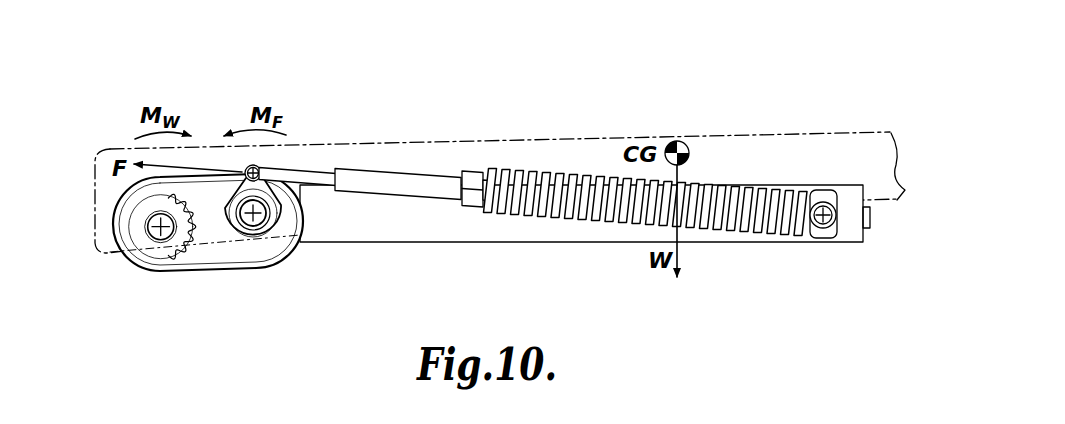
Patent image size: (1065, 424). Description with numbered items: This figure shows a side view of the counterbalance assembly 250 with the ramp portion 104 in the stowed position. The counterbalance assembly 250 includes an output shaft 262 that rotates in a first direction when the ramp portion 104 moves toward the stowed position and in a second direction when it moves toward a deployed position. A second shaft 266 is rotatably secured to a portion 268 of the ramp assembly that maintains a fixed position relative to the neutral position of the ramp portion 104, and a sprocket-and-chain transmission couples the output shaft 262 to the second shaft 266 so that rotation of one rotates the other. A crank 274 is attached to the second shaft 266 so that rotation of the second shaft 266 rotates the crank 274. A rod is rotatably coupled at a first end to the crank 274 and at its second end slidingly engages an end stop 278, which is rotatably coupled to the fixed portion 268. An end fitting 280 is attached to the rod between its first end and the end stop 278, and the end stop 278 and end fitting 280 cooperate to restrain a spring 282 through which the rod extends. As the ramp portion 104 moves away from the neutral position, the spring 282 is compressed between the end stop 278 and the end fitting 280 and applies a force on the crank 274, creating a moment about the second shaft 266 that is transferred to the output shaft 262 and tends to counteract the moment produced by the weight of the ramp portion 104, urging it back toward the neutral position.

The ramp portion 104 is at (718, 133).
The counterbalance assembly 250 is at (632, 89).
The output shaft 262 is at (148, 214).
The second shaft 266 is at (266, 226).
The portion of the ramp assembly 268 is at (565, 242).
The crank 274 is at (238, 185).
The end stop 278 is at (818, 238).
The end fitting 280 is at (473, 173).
The spring 282 is at (560, 174).